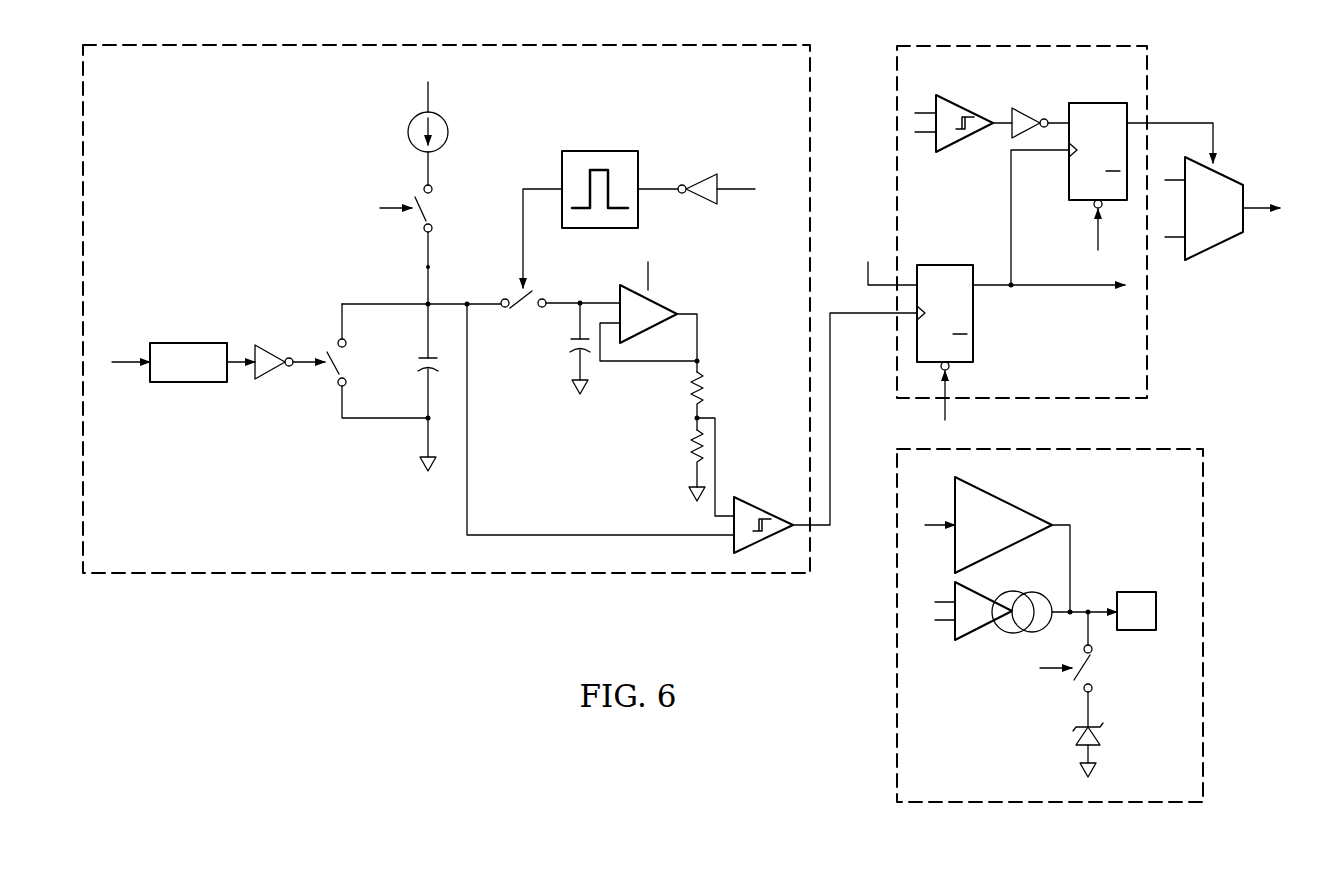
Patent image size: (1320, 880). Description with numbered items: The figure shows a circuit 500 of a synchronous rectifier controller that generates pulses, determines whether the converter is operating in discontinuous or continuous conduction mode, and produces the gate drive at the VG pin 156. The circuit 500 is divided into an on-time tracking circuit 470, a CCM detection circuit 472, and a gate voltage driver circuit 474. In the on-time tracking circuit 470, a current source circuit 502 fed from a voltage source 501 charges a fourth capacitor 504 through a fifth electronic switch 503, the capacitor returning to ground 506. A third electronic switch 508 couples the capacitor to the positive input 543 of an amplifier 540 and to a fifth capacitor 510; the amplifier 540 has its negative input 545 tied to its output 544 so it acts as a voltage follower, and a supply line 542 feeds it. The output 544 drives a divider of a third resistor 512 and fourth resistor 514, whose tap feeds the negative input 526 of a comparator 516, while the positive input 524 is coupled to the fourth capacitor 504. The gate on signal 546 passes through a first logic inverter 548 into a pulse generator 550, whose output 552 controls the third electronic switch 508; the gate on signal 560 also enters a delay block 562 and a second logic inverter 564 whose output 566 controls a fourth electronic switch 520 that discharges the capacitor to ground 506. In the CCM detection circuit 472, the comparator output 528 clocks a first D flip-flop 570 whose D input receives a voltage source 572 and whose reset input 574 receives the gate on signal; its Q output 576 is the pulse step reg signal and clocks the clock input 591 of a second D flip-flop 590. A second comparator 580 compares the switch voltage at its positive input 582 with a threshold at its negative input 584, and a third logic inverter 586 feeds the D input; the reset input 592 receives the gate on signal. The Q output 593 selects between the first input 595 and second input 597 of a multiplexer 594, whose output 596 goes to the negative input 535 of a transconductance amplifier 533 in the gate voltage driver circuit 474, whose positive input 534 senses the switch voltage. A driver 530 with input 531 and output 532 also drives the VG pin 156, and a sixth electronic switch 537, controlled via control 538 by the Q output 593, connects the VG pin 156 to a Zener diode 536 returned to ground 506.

The circuit 500 is at (1268, 70).
The on-time tracking circuit 470 is at (362, 578).
The CCM detection circuit 472 is at (1150, 70).
The gate voltage driver circuit 474 is at (1206, 666).
The voltage source 501 is at (424, 103).
The current source circuit 502 is at (408, 130).
The fifth electronic switch 503 is at (440, 214).
The fourth capacitor 504 is at (416, 361).
The ground 506 is at (416, 464).
The third electronic switch 508 is at (514, 310).
The fifth capacitor 510 is at (568, 343).
The third resistor 512 is at (705, 396).
The fourth resistor 514 is at (690, 446).
The comparator 516 is at (770, 512).
The fourth electronic switch 520 is at (334, 386).
The positive input 524 is at (570, 533).
The negative input 526 is at (718, 452).
The output 528 is at (862, 318).
The driver 530 is at (1005, 500).
The input 531 is at (932, 522).
The output 532 is at (1074, 542).
The transconductance amplifier 533 is at (975, 638).
The positive input 534 is at (940, 600).
The negative input 535 is at (943, 625).
The Zener diode 536 is at (1100, 736).
The sixth electronic switch 537 is at (1093, 664).
The control 538 is at (1052, 676).
The amplifier 540 is at (665, 303).
The amplifier supply input 542 is at (652, 284).
The positive input 543 is at (598, 302).
The output 544 is at (700, 342).
The negative input 545 is at (650, 362).
The input line 546 is at (738, 188).
The first logic inverter 548 is at (688, 184).
The pulse generator 550 is at (598, 150).
The pulse generator output line 552 is at (541, 188).
The input 560 is at (124, 360).
The delay block 562 is at (190, 343).
The second logic inverter 564 is at (278, 352).
The inverter output 566 is at (312, 368).
The first D flip-flop 570 is at (945, 265).
The voltage source 572 is at (905, 282).
The reset input 574 is at (940, 416).
The Q output 576 is at (995, 288).
The second comparator 580 is at (970, 108).
The positive input 582 is at (926, 110).
The negative input 584 is at (926, 137).
The third logic inverter 586 is at (1030, 118).
The second D flip-flop 590 is at (1100, 102).
The clock input 591 is at (1035, 152).
The reset input 592 is at (1098, 232).
The Q output 593 is at (1180, 122).
The multiplexer 594 is at (1228, 173).
The first input 595 is at (1168, 180).
The multiplexer output 596 is at (1255, 212).
The second input 597 is at (1170, 240).
The VG pin 156 is at (1137, 592).